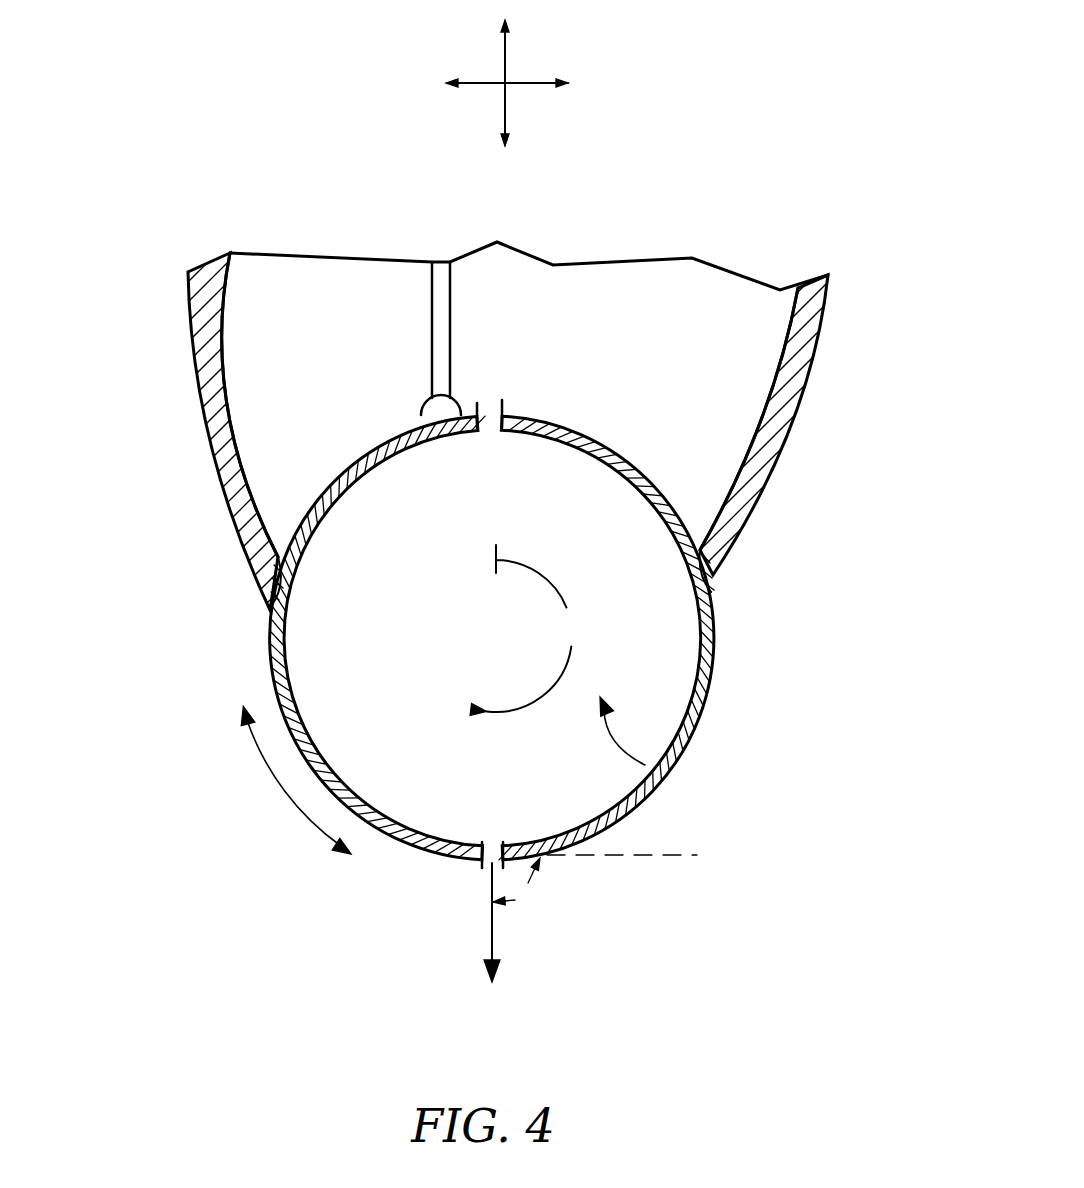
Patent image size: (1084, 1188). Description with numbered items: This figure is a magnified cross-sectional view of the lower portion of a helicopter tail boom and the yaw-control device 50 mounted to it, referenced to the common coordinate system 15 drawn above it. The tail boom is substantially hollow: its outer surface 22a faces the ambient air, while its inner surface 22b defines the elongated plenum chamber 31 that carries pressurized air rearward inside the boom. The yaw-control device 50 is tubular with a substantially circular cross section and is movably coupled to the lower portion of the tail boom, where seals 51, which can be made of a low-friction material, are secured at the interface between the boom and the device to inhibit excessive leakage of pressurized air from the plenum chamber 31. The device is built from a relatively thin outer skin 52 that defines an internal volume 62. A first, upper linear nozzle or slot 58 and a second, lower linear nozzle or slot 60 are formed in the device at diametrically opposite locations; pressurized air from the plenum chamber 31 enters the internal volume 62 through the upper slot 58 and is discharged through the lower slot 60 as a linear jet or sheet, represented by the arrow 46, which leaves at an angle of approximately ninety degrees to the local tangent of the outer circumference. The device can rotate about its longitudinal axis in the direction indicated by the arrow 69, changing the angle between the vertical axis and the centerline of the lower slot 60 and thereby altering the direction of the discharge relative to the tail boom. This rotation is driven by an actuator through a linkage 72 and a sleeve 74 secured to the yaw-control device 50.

The coordinate system 15 is at (512, 75).
The outer surface of the tail boom 22a is at (197, 378).
The inner surface of the tail boom 22b is at (235, 410).
The plenum chamber 31 is at (667, 313).
The discharge 46 is at (490, 932).
The yaw-control device 50 is at (723, 697).
The seals 51 is at (267, 590).
The outer skin 52 is at (405, 838).
The upper slot 58 is at (488, 402).
The lower slot 60 is at (490, 840).
The internal volume 62 is at (655, 760).
The arrow indicating direction of movement 69 is at (282, 792).
The linkage 72 is at (430, 290).
The sleeve 74 is at (420, 410).